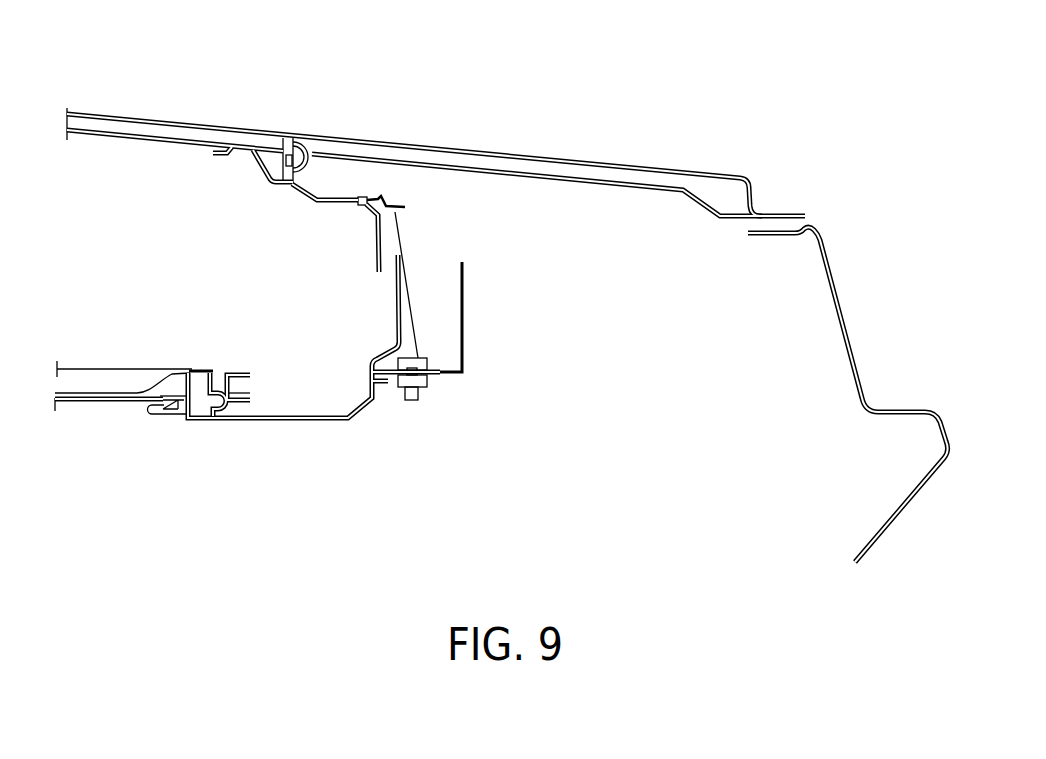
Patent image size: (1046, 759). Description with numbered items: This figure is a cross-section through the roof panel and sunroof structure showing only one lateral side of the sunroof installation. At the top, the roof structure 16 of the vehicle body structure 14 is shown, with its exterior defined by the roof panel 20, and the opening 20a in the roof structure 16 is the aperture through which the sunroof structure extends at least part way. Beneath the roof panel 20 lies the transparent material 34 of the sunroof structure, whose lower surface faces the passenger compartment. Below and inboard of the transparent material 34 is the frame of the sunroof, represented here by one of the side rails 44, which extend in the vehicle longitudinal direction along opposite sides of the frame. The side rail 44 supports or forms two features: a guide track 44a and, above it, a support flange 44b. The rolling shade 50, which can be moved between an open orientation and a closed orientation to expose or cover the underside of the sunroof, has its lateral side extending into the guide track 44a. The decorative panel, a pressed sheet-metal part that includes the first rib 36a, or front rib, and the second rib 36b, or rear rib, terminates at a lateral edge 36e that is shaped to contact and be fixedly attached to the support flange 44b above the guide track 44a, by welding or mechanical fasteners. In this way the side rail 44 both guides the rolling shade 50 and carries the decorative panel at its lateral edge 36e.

The vehicle body structure 14 is at (851, 291).
The roof structure 16 is at (581, 153).
The roof panel 20 is at (455, 150).
The opening 20a is at (286, 139).
The transparent material 34 is at (138, 134).
The first rib 36a is at (123, 366).
The second rib 36b is at (92, 380).
The lateral edges 36e is at (204, 369).
The side rails 44 is at (403, 313).
The guide tracks 44a is at (177, 411).
The support flanges 44b is at (221, 373).
The rolling shade 50 is at (108, 404).